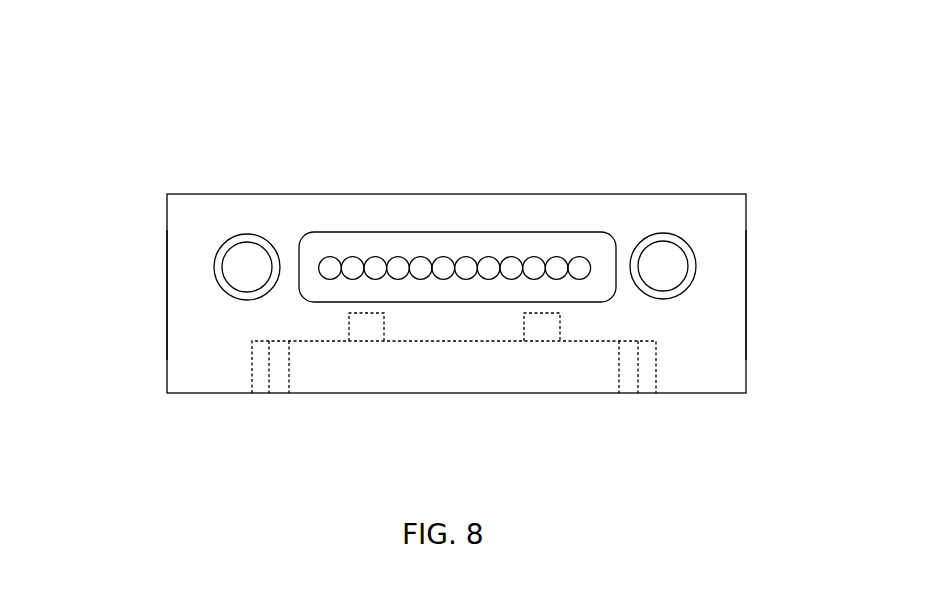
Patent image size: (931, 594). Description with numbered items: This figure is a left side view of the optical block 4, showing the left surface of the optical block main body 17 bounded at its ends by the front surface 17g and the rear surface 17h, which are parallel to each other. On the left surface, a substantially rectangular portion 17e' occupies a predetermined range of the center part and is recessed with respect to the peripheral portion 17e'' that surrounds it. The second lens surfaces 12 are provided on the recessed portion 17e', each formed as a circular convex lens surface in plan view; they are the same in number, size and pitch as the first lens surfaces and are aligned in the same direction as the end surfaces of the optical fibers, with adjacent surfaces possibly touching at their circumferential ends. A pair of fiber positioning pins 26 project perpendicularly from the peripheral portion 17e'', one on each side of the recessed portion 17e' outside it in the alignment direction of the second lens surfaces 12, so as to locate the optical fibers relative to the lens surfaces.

The optical block 4 is at (187, 107).
The optical block main body 17 is at (348, 193).
The rear surface 17h is at (167, 290).
The front surface 17g is at (746, 277).
The fiber positioning pins 26 is at (243, 235).
The portion 17e' is at (457, 219).
The peripheral portion 17e'' is at (663, 214).
The second lens surfaces 12 is at (488, 257).